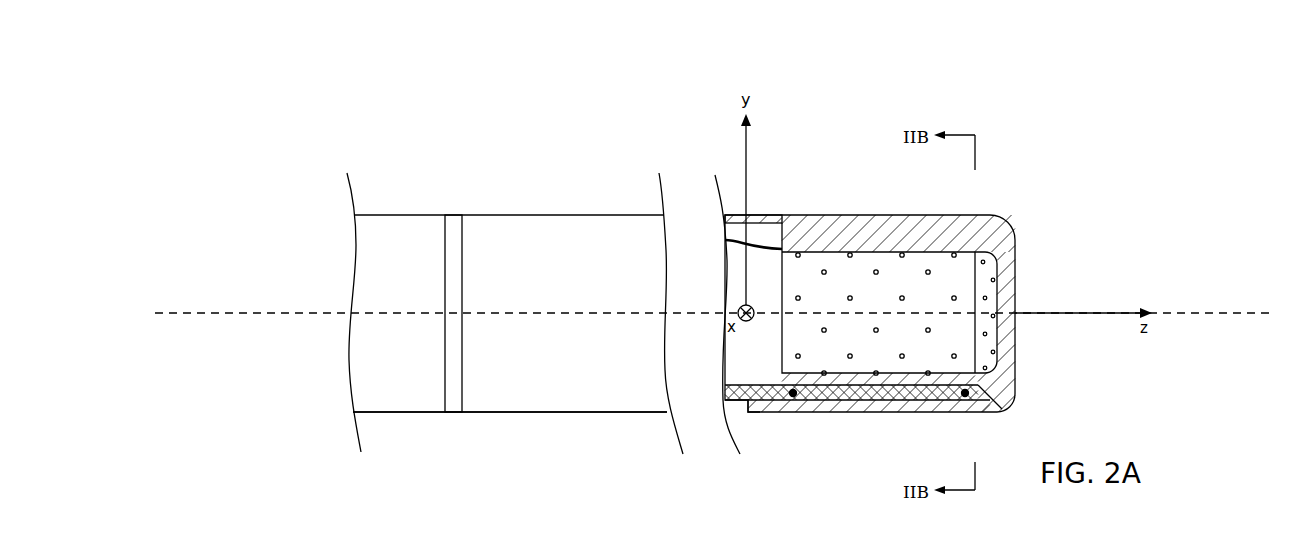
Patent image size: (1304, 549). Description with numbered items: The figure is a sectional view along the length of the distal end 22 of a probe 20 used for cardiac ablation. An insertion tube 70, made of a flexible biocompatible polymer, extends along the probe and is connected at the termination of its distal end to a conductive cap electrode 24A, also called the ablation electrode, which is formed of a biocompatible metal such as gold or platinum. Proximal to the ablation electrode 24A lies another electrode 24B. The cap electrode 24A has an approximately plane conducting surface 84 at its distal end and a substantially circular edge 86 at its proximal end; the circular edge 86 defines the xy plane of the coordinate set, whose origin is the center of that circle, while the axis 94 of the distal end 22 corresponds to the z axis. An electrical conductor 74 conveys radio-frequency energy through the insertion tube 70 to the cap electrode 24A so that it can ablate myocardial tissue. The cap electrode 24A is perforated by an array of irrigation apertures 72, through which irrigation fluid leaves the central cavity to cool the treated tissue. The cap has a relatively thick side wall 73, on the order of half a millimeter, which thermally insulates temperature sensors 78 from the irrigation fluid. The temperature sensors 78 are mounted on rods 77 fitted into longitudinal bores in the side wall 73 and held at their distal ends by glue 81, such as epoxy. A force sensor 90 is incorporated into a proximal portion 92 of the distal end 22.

The probe 20 is at (400, 215).
The distal end 22 is at (515, 304).
The conductive cap electrode 24A is at (820, 215).
The electrode 24B is at (453, 215).
The insertion tube 70 is at (405, 412).
The irrigation apertures 72 is at (875, 331).
The side wall 73 is at (873, 240).
The electrical conductor 74 is at (770, 245).
The rods 77 is at (882, 400).
The temperature sensors 78 is at (795, 397).
The glue 81 is at (998, 405).
The plane conducting surface 84 is at (1015, 265).
The circular edge 86 is at (742, 407).
The force sensor 90 is at (549, 449).
The proximal portion 92 is at (370, 215).
The axis 94 is at (185, 314).